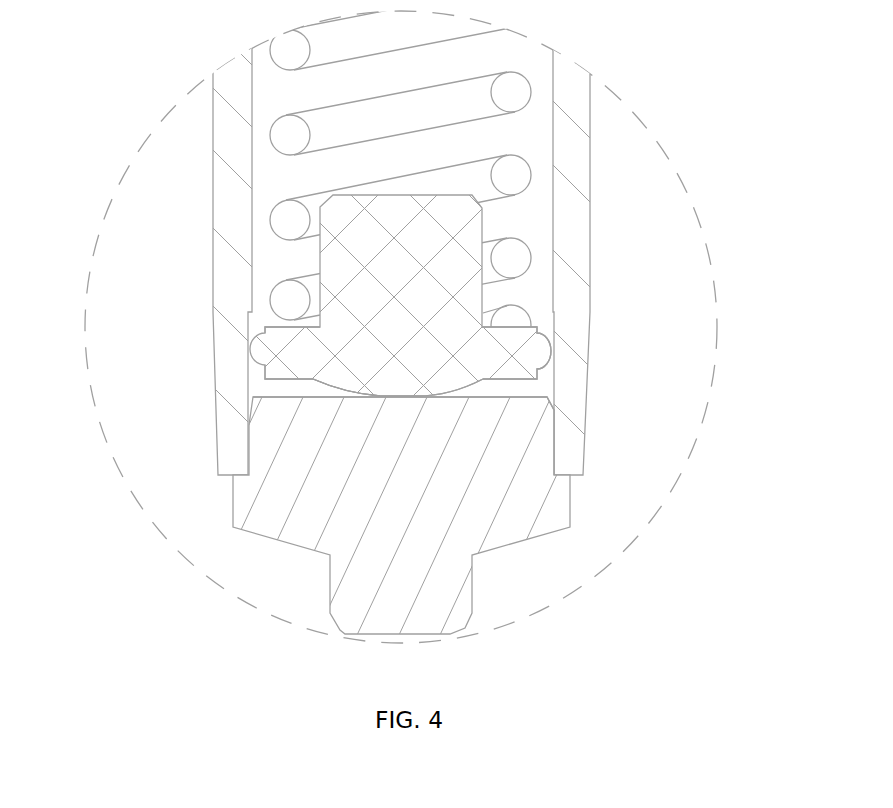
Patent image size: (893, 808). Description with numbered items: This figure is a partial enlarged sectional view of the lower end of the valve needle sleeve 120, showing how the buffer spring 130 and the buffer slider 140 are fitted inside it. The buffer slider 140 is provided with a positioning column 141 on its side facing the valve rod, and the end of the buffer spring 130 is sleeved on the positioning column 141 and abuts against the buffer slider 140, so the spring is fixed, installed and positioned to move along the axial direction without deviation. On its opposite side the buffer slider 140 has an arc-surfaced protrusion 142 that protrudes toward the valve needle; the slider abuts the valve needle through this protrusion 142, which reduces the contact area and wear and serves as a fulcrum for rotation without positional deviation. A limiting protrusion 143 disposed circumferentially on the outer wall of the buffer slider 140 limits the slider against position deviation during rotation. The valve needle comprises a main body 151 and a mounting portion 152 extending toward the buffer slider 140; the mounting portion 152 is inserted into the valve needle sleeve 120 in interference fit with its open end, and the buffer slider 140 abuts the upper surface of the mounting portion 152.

The valve needle sleeve 120 is at (575, 255).
The buffer spring 130 is at (283, 218).
The buffer slider 140 is at (297, 367).
The positioning column 141 is at (333, 296).
The protrusion 142 is at (400, 393).
The limiting protrusion 143 is at (545, 352).
The main body 151 is at (545, 518).
The mounting portion 152 is at (525, 437).